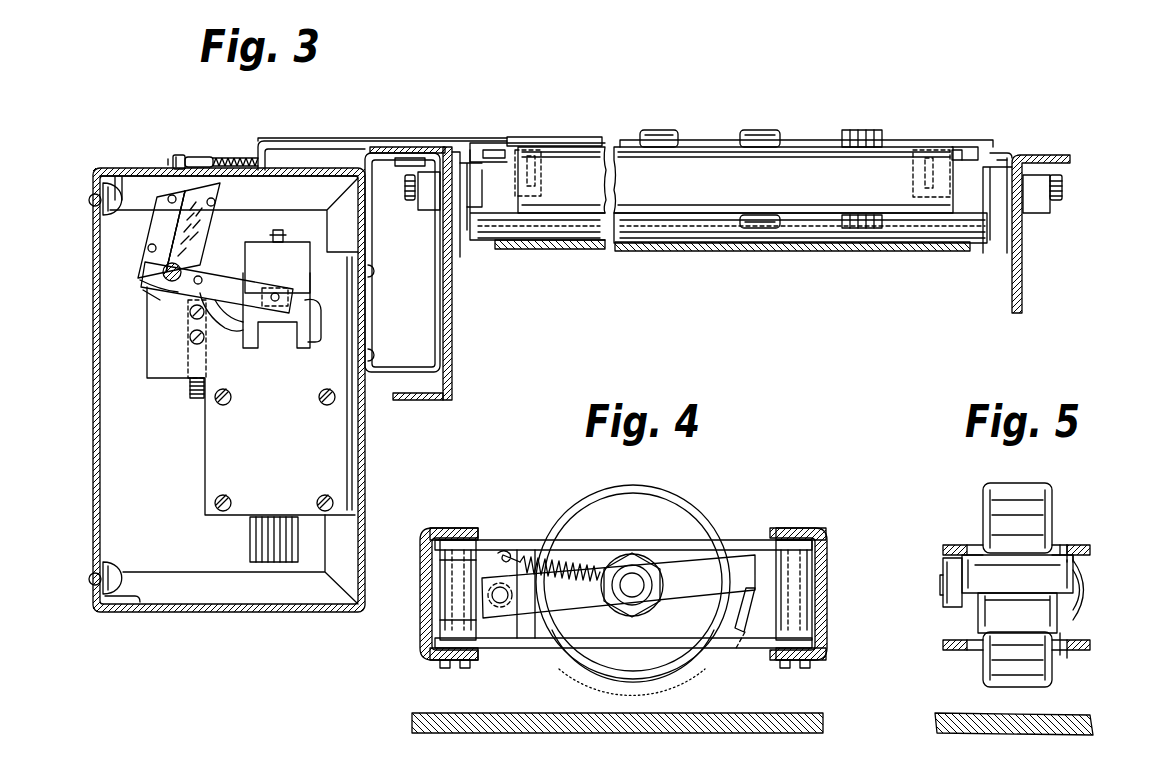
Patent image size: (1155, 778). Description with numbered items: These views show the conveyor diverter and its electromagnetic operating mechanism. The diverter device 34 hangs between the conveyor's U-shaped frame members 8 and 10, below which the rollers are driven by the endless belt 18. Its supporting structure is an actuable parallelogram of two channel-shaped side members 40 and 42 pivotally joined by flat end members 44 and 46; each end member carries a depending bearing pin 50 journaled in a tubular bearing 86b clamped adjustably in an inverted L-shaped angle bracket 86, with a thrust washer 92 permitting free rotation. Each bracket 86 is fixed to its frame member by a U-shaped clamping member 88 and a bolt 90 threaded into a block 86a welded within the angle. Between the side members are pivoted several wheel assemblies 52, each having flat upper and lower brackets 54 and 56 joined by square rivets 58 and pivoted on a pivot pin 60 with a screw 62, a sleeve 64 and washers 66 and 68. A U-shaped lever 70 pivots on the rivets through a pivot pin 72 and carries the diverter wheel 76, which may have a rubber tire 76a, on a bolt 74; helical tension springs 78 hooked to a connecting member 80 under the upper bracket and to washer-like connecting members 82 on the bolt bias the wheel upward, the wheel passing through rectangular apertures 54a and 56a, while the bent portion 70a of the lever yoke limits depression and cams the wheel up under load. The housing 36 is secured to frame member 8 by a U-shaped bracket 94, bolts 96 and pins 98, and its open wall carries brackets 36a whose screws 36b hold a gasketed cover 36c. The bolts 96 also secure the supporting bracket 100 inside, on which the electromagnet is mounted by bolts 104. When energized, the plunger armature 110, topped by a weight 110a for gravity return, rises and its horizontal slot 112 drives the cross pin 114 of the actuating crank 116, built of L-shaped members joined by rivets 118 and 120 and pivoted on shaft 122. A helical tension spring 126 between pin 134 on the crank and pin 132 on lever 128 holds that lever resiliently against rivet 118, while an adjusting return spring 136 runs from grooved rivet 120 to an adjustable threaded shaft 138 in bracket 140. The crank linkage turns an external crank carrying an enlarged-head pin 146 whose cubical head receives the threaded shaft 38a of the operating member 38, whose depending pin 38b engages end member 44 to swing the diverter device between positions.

In FIG. 3, the frame member 8 is at (452, 348).
In FIG. 3, the frame member 10 is at (1012, 298).
In FIG. 3, the endless motor driven belt 18 is at (757, 251).
In FIG. 4, the endless motor driven belt 18 is at (412, 722).
In FIG. 5, the endless motor driven belt 18 is at (935, 722).
In FIG. 3, the diverter device 34 is at (708, 128).
In FIG. 3, the housing 36 is at (263, 612).
In FIG. 3, the brackets 36a is at (130, 170).
In FIG. 3, the screw 36b is at (93, 198).
In FIG. 3, the gasketed cover 36c is at (93, 336).
In FIG. 3, the operating member 38 is at (323, 141).
In FIG. 3, the threaded shaft 38a is at (247, 156).
In FIG. 3, the depending pin 38b is at (530, 137).
In FIG. 4, the side member 40 is at (828, 592).
In FIG. 3, the side member 42 is at (826, 206).
In FIG. 4, the side member 42 is at (421, 607).
In FIG. 3, the end member 44 is at (500, 150).
In FIG. 3, the end member 46 is at (956, 150).
In FIG. 3, the bearing pin 50 is at (543, 192).
In FIG. 4, the wheel assembly 52 is at (718, 511).
In FIG. 5, the wheel assembly 52 is at (965, 527).
In FIG. 4, the upper supporting bracket 54 is at (617, 545).
In FIG. 5, the upper supporting bracket 54 is at (1090, 549).
In FIG. 5, the rectangular aperture 54a is at (1062, 546).
In FIG. 4, the lower supporting bracket 56 is at (654, 648).
In FIG. 5, the lower supporting bracket 56 is at (1090, 645).
In FIG. 5, the rectangular aperture 56a is at (1062, 656).
In FIG. 4, the rivets 58 is at (518, 640).
In FIG. 4, the pivot pin 60 is at (466, 669).
In FIG. 4, the screw 62 is at (456, 540).
In FIG. 4, the sleeve 64 is at (440, 622).
In FIG. 4, the first washer 66 is at (433, 656).
In FIG. 4, the washer 68 is at (433, 533).
In FIG. 4, the lever 70 is at (700, 593).
In FIG. 5, the lever 70 is at (965, 570).
In FIG. 4, the inwardly bent portion 70a is at (740, 634).
In FIG. 5, the inwardly bent portion 70a is at (985, 620).
In FIG. 4, the pivot pin 72 is at (510, 594).
In FIG. 4, the bolt 74 is at (632, 600).
In FIG. 5, the bolt 74 is at (1088, 592).
In FIG. 3, the diverter wheel 76 is at (658, 130).
In FIG. 4, the diverter wheel 76 is at (578, 498).
In FIG. 5, the diverter wheel 76 is at (1052, 498).
In FIG. 3, the tire 76a is at (860, 130).
In FIG. 4, the helical tension springs 78 is at (573, 578).
In FIG. 4, the connecting member 80 is at (506, 550).
In FIG. 4, the connecting members 82 is at (620, 597).
In FIG. 3, the angle bracket 86 is at (461, 262).
In FIG. 3, the block 86a is at (468, 232).
In FIG. 3, the tubular bearing 86b is at (500, 158).
In FIG. 3, the U-shaped clamping member 88 is at (430, 212).
In FIG. 3, the bolt 90 is at (404, 200).
In FIG. 3, the thrust washer 92 is at (556, 152).
In FIG. 3, the U-shaped bracket 94 is at (372, 318).
In FIG. 3, the bolts 96 is at (374, 272).
In FIG. 3, the pins 98 is at (405, 166).
In FIG. 3, the supporting bracket 100 is at (205, 462).
In FIG. 3, the bolts 104 is at (320, 403).
In FIG. 3, the armature 110 is at (282, 338).
In FIG. 3, the weight 110a is at (296, 242).
In FIG. 3, the horizontal slot 112 is at (319, 340).
In FIG. 3, the cross pin 114 is at (276, 291).
In FIG. 3, the actuating crank 116 is at (143, 290).
In FIG. 3, the rivet 118 is at (170, 194).
In FIG. 3, the rivet 120 is at (203, 281).
In FIG. 3, the shaft 122 is at (163, 270).
In FIG. 3, the helical tension spring 126 is at (210, 228).
In FIG. 3, the lever 128 is at (205, 244).
In FIG. 3, the pin 132 is at (216, 203).
In FIG. 3, the pin 134 is at (147, 248).
In FIG. 3, the adjusting return spring 136 is at (190, 314).
In FIG. 3, the adjustable threaded shaft 138 is at (190, 398).
In FIG. 3, the bracket 140 is at (190, 340).
In FIG. 3, the enlarged-head pin 146 is at (197, 155).